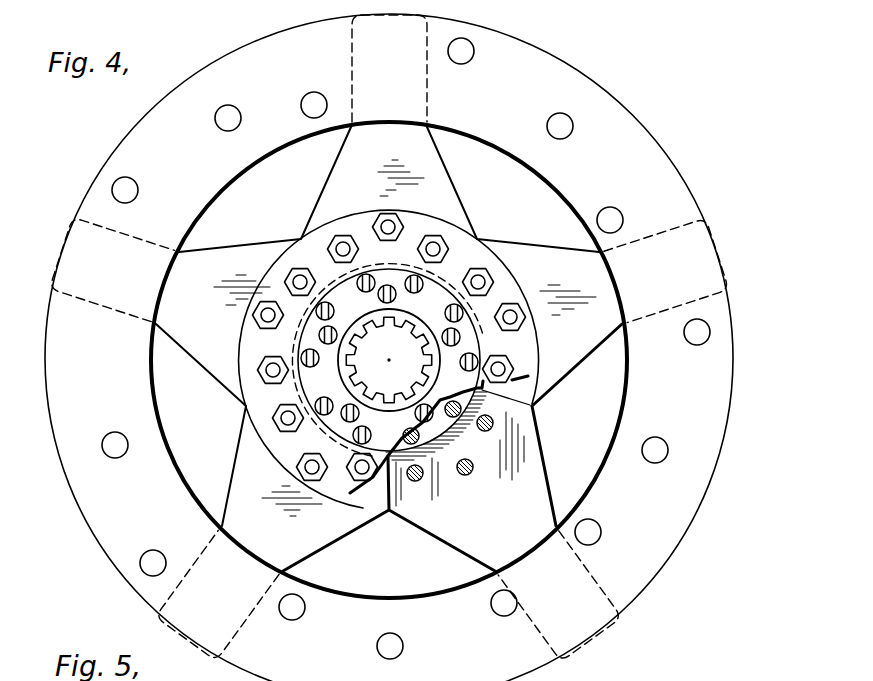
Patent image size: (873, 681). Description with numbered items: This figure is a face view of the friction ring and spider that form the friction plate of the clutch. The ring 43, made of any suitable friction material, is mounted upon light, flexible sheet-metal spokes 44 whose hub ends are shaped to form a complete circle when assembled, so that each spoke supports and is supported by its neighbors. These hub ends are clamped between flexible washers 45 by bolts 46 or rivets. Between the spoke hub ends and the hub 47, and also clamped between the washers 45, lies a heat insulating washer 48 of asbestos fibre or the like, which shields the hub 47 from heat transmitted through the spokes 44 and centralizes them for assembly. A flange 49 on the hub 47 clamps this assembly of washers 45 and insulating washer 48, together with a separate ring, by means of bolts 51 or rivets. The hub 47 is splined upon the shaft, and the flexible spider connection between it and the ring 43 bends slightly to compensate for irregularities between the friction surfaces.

The ring 43 is at (700, 512).
The spokes 44 is at (533, 482).
The flexible washers 45 is at (352, 495).
The bolts 46 is at (465, 475).
The hub 47 is at (490, 382).
The heat insulating washer 48 is at (445, 447).
The flange 49 is at (432, 378).
The bolts 51 is at (483, 355).